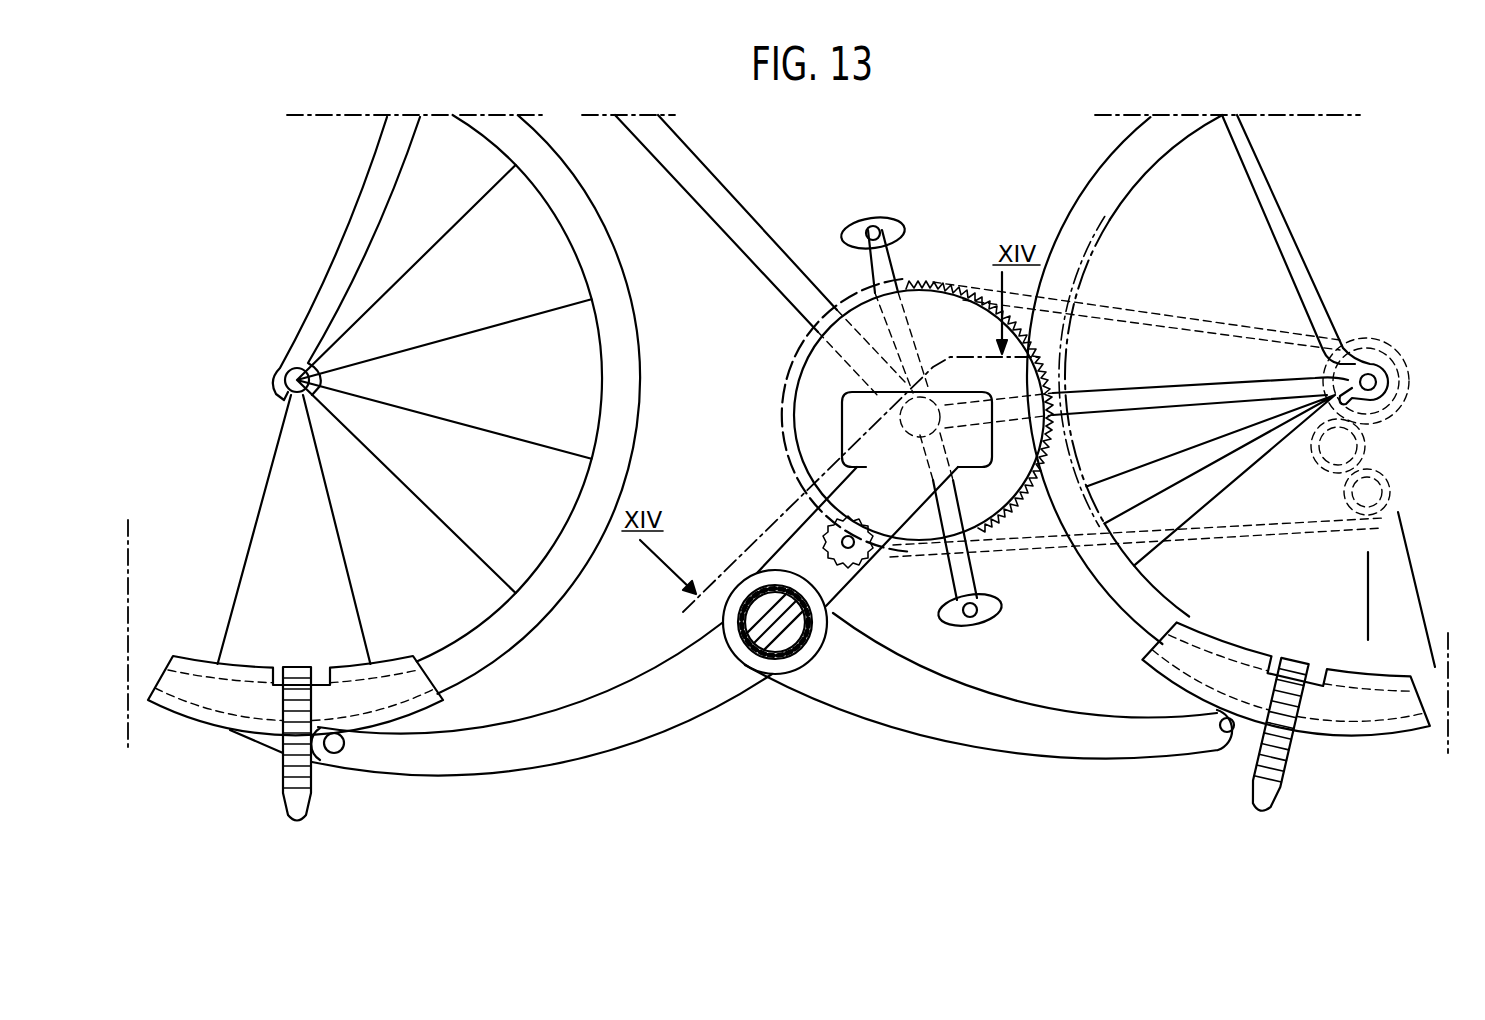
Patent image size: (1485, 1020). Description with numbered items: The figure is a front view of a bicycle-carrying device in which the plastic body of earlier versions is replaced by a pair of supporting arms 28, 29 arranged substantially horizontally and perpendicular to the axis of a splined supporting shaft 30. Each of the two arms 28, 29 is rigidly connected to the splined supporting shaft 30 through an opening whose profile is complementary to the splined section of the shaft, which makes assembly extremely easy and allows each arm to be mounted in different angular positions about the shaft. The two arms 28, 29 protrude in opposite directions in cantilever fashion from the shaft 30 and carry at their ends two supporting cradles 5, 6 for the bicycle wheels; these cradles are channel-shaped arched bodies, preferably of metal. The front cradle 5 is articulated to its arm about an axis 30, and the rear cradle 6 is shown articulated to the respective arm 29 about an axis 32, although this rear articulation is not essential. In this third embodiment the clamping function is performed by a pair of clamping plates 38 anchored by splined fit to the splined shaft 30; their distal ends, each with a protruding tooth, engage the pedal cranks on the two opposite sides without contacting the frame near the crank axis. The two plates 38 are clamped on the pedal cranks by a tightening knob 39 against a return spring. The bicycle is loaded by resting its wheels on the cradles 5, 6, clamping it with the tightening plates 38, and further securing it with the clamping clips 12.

The front cradle 5 is at (193, 657).
The rear cradle 6 is at (1225, 640).
The clamping clips 12 is at (293, 780).
The supporting arm 28 is at (620, 736).
The supporting arm 29 is at (975, 740).
The splined supporting shaft 30 is at (338, 752).
The axis 32 is at (1225, 737).
The clamping plates 38 is at (850, 492).
The tightening knob 39 is at (842, 540).